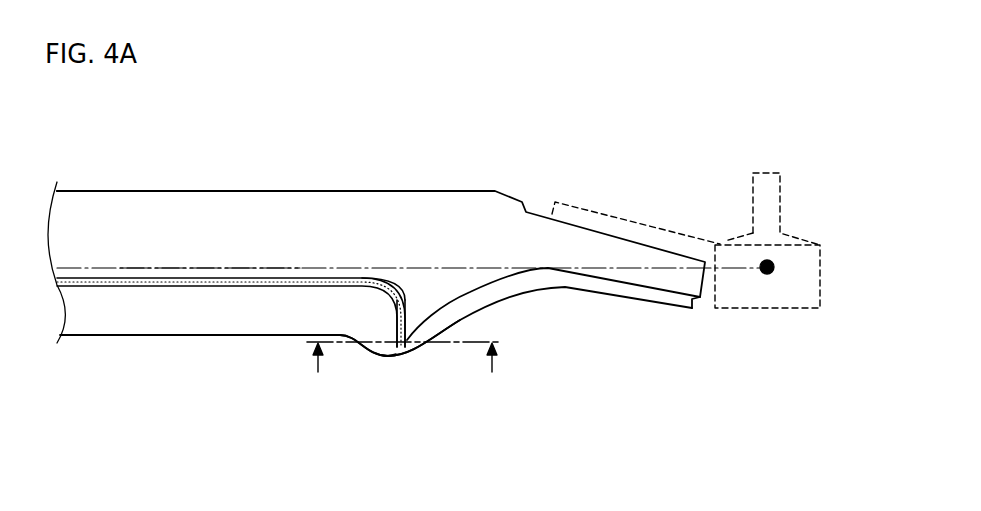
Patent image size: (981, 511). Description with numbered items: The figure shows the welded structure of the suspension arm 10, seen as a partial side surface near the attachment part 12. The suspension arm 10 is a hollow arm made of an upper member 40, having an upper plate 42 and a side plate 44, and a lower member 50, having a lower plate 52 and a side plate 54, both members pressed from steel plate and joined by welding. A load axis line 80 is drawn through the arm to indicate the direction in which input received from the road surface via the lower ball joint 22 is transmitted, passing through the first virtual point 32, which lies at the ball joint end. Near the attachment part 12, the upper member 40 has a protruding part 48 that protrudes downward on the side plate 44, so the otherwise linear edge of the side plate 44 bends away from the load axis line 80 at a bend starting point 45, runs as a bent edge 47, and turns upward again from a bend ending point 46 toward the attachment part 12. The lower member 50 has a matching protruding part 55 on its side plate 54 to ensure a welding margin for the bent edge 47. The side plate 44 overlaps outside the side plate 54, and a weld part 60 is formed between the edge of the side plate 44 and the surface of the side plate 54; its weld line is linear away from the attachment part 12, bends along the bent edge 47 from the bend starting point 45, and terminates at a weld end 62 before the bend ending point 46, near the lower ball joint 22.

The suspension arm 10 is at (403, 471).
The attachment part 12 is at (665, 282).
The lower ball joint 22 is at (808, 312).
The first virtual point 32 is at (767, 275).
The upper member 40 is at (400, 182).
The upper plate 42 is at (102, 191).
The side plate 44 is at (232, 198).
The bend starting point 45 is at (372, 272).
The bend ending point 46 is at (412, 352).
The bent edge 47 is at (400, 298).
The protruding part 48 is at (440, 312).
The lower member 50 is at (292, 352).
The lower plate 52 is at (117, 335).
The side plate 54 is at (155, 328).
The protruding part 55 is at (398, 348).
The weld part 60 is at (90, 287).
The weld end 62 is at (386, 356).
The load axis line 80 is at (157, 268).